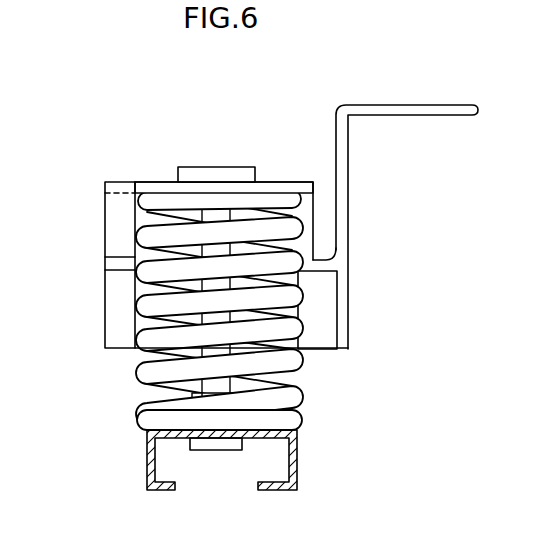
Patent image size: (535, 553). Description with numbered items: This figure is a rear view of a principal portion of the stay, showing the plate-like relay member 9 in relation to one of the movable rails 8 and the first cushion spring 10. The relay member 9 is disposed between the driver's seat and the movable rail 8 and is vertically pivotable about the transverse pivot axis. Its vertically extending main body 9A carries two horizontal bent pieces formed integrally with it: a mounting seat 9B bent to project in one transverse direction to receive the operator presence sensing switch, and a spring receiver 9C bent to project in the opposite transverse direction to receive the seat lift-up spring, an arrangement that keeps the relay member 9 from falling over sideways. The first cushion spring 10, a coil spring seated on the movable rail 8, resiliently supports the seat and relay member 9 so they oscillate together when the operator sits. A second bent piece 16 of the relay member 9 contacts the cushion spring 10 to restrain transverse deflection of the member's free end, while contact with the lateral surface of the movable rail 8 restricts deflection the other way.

The movable rail 8 is at (297, 457).
The relay member 9 is at (281, 265).
The main body 9A is at (348, 305).
The mounting seat 9B is at (438, 117).
The spring receiver 9C is at (323, 258).
The first cushion spring 10 is at (138, 307).
The second bent piece 16 is at (118, 222).